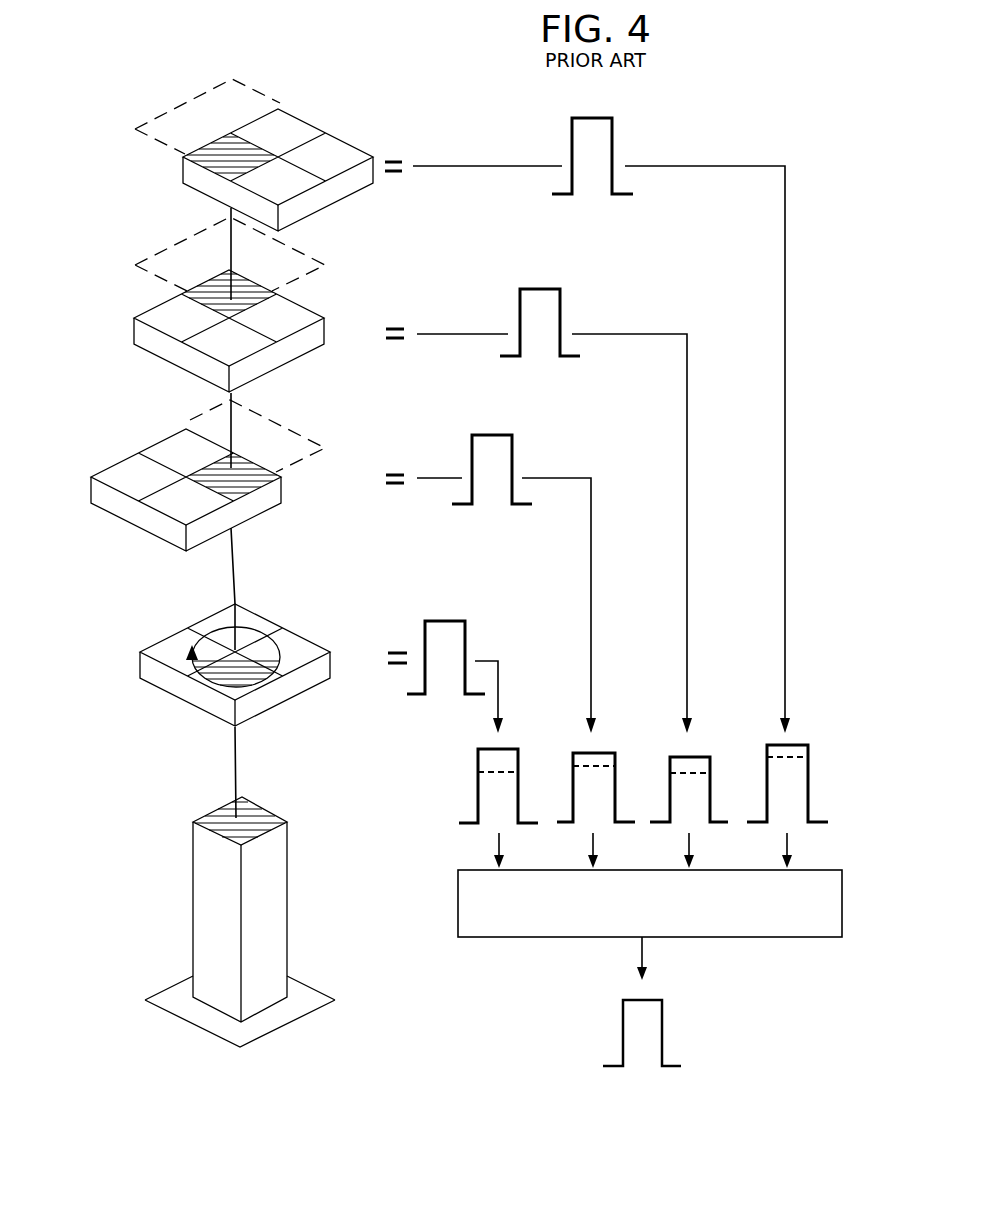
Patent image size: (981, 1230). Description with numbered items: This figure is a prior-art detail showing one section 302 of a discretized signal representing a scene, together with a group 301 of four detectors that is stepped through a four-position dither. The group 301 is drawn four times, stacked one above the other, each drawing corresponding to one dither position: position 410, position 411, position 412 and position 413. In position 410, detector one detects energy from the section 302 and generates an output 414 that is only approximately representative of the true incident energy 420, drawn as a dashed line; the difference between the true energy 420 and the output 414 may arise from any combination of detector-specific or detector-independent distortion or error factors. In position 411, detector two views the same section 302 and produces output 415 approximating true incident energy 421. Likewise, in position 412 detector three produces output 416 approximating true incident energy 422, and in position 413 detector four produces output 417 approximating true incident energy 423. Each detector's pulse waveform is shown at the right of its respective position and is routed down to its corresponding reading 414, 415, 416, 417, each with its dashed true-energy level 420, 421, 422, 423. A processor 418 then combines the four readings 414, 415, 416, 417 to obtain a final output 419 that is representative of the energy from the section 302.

The group of four detectors 301 is at (197, 192).
The section of discretized signal 302 is at (208, 845).
The first dither position 410 is at (118, 649).
The second dither position 411 is at (82, 452).
The third dither position 412 is at (112, 310).
The fourth dither position 413 is at (120, 123).
The output of detector one 414 is at (503, 748).
The output of detector two 415 is at (603, 747).
The output of detector three 416 is at (708, 755).
The output of detector four 417 is at (808, 745).
The processor 418 is at (842, 888).
The final output 419 is at (662, 1030).
The true incident energy 420 is at (518, 770).
The true incident energy 421 is at (615, 766).
The true incident energy 422 is at (710, 772).
The true incident energy 423 is at (808, 757).